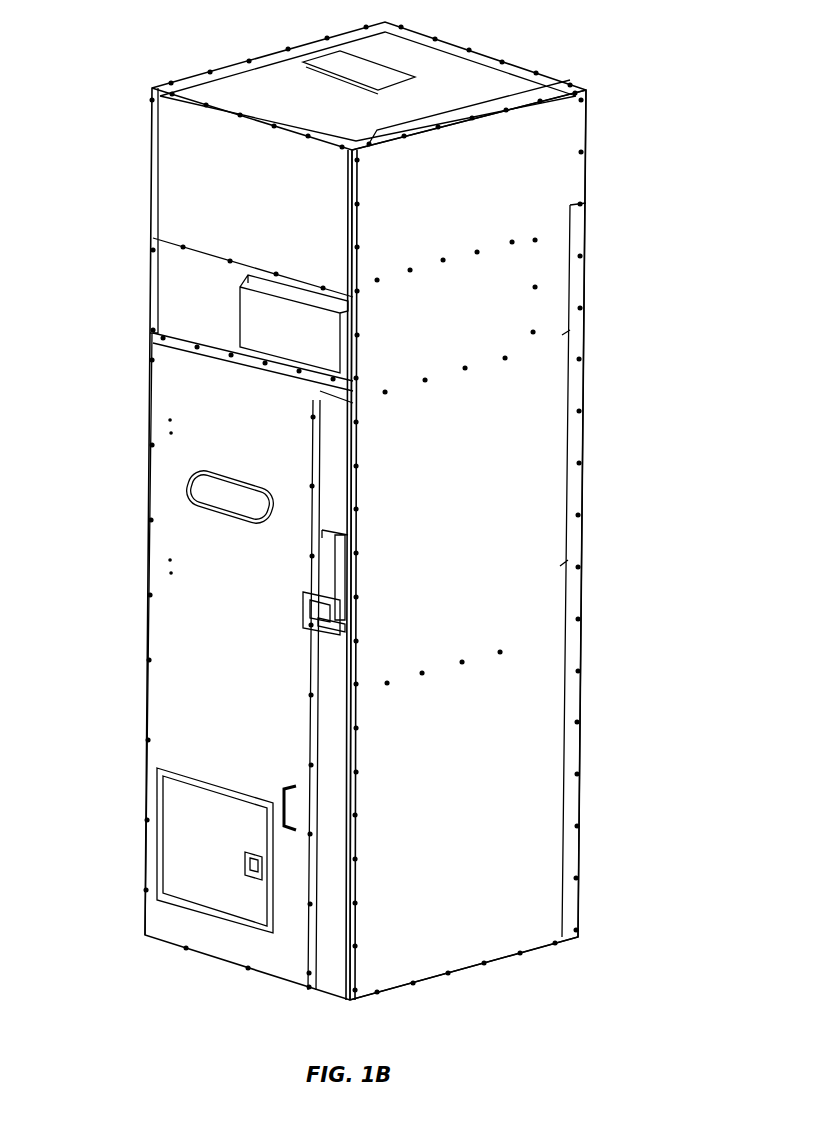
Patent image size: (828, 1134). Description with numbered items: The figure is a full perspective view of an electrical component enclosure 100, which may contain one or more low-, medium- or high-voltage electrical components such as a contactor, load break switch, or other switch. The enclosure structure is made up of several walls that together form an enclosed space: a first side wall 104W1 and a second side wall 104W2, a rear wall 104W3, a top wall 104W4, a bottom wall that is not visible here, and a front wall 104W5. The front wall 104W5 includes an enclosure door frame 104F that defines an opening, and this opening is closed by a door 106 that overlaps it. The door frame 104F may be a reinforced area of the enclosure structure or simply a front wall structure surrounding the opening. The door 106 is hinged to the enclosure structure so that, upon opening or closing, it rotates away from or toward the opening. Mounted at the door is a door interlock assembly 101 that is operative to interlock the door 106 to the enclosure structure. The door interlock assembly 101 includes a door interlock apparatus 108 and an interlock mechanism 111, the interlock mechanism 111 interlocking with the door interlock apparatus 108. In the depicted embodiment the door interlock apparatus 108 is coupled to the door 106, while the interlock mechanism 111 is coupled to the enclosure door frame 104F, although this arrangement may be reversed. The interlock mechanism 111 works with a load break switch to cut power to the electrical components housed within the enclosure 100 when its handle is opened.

The electrical component enclosure 100 is at (232, 58).
The top wall 104W4 is at (440, 82).
The front wall 104W5 is at (193, 273).
The side wall 104W2 is at (152, 458).
The rear wall 104W3 is at (587, 283).
The side wall 104W1 is at (520, 460).
The enclosure door frame 104F is at (340, 722).
The door 106 is at (244, 671).
The door interlock apparatus 108 is at (303, 588).
The door interlock assembly 101 is at (292, 600).
The interlock mechanism 111 is at (345, 626).